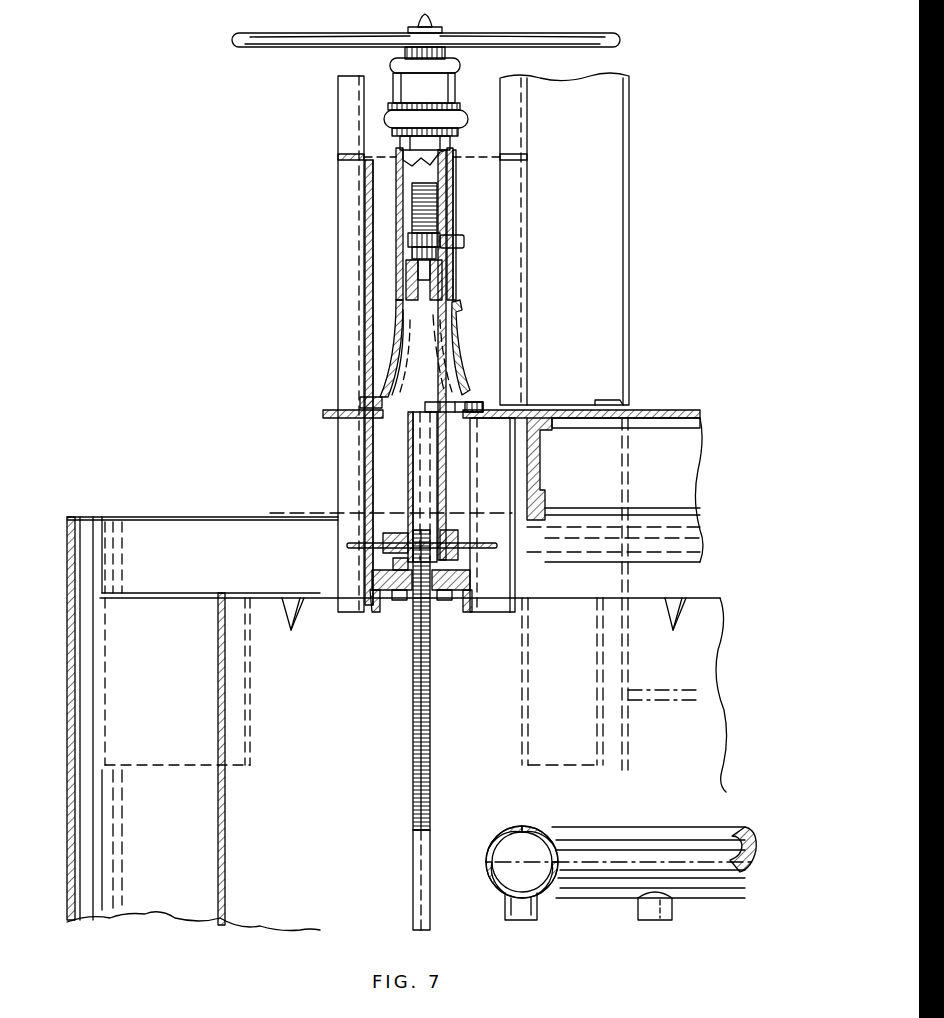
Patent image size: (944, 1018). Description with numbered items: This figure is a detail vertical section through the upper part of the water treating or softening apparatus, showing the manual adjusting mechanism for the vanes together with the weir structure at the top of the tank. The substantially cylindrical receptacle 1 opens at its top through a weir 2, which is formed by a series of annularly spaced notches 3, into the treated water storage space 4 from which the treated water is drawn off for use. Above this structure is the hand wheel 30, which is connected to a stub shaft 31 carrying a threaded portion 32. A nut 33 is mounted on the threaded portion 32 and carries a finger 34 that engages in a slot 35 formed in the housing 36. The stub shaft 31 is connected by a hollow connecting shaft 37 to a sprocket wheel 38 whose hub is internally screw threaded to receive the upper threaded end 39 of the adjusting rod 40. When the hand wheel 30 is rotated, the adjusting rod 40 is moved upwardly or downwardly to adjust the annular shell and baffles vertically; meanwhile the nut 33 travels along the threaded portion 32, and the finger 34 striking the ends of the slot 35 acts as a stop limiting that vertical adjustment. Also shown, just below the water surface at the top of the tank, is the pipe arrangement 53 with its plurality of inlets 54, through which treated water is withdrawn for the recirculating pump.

The cylindrical receptacle 1 is at (225, 808).
The weir 2 is at (648, 606).
The notches 3 is at (290, 612).
The treated water storage space 4 is at (140, 830).
The hand wheel 30 is at (600, 48).
The stub shaft 31 is at (418, 170).
The threaded portion 32 is at (428, 205).
The nut 33 is at (412, 240).
The finger 34 is at (452, 241).
The slot 35 is at (450, 205).
The housing 36 is at (453, 275).
The hollow connecting shaft 37 is at (410, 450).
The sprocket wheel 38 is at (362, 545).
The upper threaded end 39 is at (418, 638).
The adjusting rod 40 is at (415, 852).
The pipe arrangement 53 is at (600, 888).
The inlets 54 is at (522, 912).